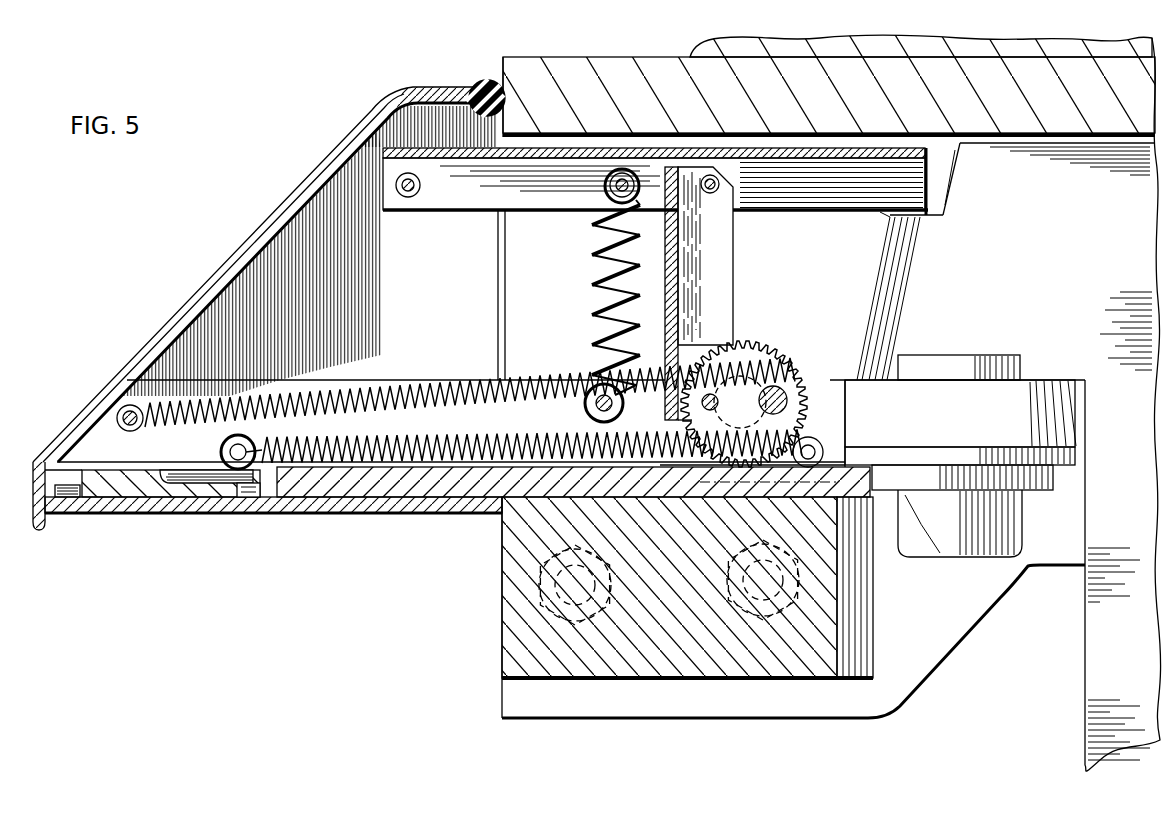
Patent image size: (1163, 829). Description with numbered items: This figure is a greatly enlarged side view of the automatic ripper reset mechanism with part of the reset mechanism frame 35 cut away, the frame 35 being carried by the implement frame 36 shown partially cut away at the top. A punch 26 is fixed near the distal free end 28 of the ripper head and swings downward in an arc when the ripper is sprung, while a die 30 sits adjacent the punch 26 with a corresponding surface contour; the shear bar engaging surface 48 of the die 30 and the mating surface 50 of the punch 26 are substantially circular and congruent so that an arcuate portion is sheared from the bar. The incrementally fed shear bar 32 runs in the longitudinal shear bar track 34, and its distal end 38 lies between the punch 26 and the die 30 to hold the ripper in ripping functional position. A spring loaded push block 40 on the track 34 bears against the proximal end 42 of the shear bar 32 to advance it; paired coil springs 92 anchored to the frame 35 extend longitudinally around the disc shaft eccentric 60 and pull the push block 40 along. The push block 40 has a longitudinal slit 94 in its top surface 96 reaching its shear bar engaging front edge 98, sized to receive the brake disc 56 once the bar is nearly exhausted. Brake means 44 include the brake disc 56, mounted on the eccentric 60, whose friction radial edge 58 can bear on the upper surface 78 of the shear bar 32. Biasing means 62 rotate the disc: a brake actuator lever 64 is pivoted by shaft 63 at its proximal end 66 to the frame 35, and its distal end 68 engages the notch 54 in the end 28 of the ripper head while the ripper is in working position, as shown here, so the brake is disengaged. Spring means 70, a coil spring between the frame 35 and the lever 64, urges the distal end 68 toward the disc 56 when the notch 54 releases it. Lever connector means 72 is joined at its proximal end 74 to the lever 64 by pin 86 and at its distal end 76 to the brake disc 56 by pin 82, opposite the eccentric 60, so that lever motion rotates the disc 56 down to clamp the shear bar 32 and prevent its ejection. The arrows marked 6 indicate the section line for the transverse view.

The section line 6- 6 is at (822, 128).
The punch 26 is at (952, 417).
The distal free end of ripper head 28 is at (1054, 262).
The die 30 is at (835, 381).
The shear bar 32 is at (408, 504).
The shear bar track 34 is at (468, 490).
The reset mechanism frame 35 is at (282, 310).
The implement frame 36 is at (700, 37).
The distal end of shear bar 38 is at (862, 545).
The spring loaded push block 40 is at (102, 488).
The proximal end of shear bar 42 is at (300, 486).
The brake means 44 is at (538, 282).
The shear bar engaging surface of die 48 is at (864, 634).
The mating surface of punch 50 is at (1072, 466).
The notch 54 is at (942, 218).
The brake disc 56 is at (742, 345).
The friction radial edge 58 is at (770, 358).
The disc shaft eccentric 60 is at (782, 390).
The biasing means 62 is at (640, 403).
The shaft 63 is at (385, 210).
The brake actuator lever 64 is at (803, 195).
The proximal end of brake actuator lever 66 is at (440, 192).
The distal end of brake actuator lever 68 is at (888, 212).
The spring means 70 is at (600, 318).
The lever connector means 72 is at (690, 277).
The proximal end of lever connector means 74 is at (718, 205).
The distal end of lever connector means 76 is at (650, 447).
The upper surface of shear bar 78 is at (362, 485).
The pin 82 is at (710, 393).
The pin 86 is at (722, 181).
The coil springs 92 is at (300, 403).
The longitudinal slit 94 is at (190, 480).
The top surface of push block 96 is at (133, 462).
The shear bar engaging front edge 98 is at (258, 486).